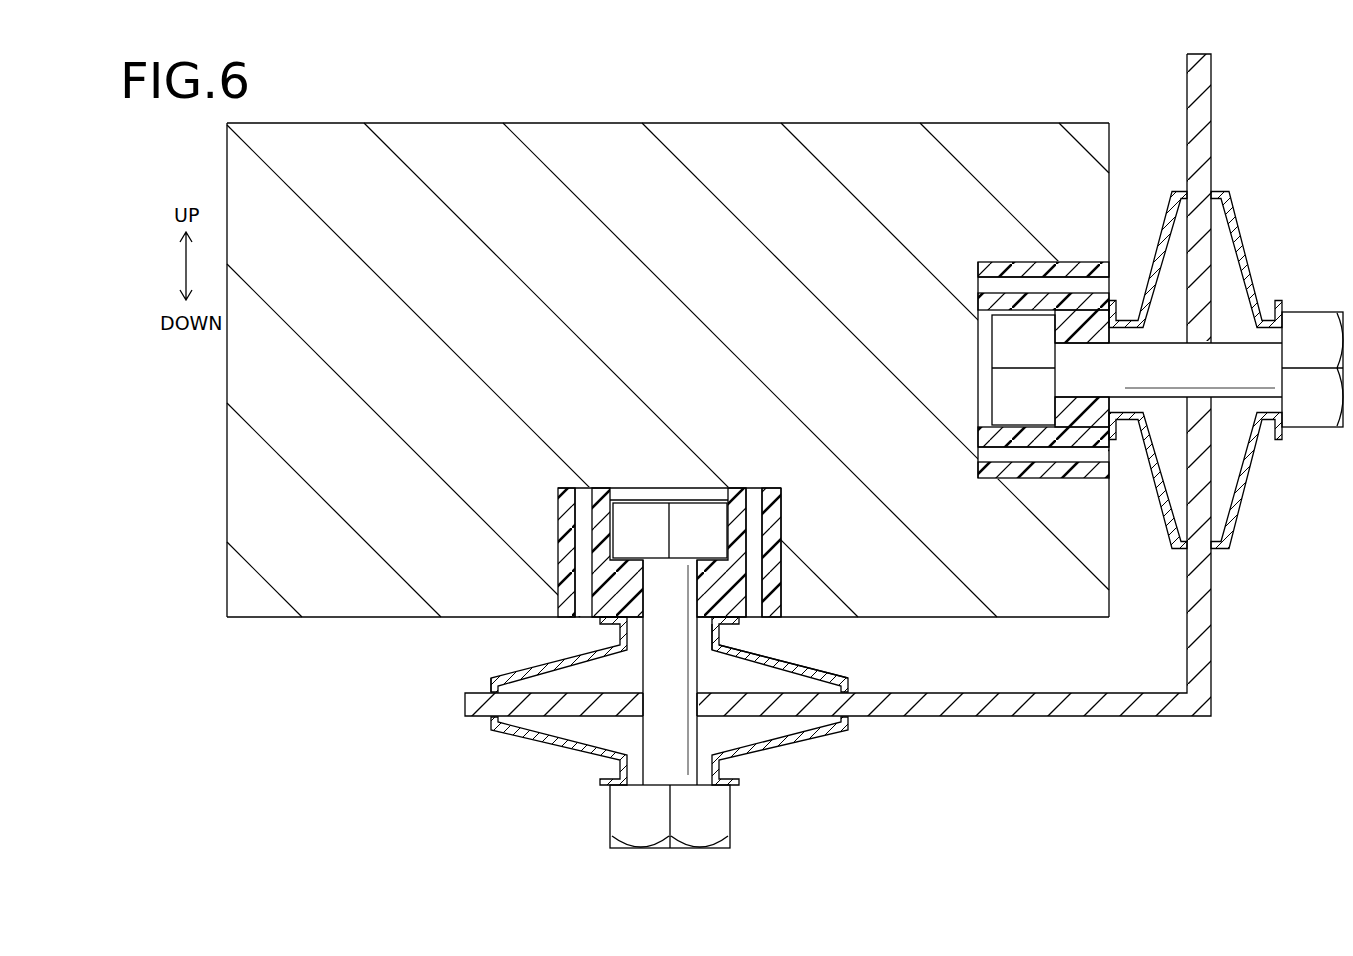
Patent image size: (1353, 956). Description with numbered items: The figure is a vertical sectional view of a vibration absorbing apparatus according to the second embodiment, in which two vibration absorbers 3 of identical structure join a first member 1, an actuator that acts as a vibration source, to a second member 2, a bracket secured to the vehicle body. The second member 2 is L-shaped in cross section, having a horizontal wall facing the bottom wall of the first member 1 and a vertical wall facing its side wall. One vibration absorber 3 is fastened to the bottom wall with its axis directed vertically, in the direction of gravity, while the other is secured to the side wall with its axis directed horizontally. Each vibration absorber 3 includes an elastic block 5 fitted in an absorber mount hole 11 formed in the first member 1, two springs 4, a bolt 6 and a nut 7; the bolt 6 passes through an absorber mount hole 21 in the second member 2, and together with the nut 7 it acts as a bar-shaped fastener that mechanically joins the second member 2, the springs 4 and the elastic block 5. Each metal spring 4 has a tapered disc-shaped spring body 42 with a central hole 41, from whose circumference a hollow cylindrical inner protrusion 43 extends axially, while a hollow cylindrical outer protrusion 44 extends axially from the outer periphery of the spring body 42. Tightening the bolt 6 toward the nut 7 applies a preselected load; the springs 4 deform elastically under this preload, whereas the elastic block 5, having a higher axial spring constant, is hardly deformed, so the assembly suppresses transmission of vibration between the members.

The first member 1 is at (1087, 146).
The second member 2 is at (839, 421).
The absorber mount hole 21 is at (703, 710).
The vibration absorber 3 is at (865, 495).
The spring 4 is at (1157, 240).
The central hole 41 is at (713, 645).
The spring body 42 is at (807, 660).
The inner protrusion 43 is at (613, 630).
The outer protrusion 44 is at (490, 682).
The elastic block 5 is at (784, 458).
The bolt 6 is at (1318, 418).
The nut 7 is at (1033, 382).
The absorber mount hole 11 is at (780, 580).